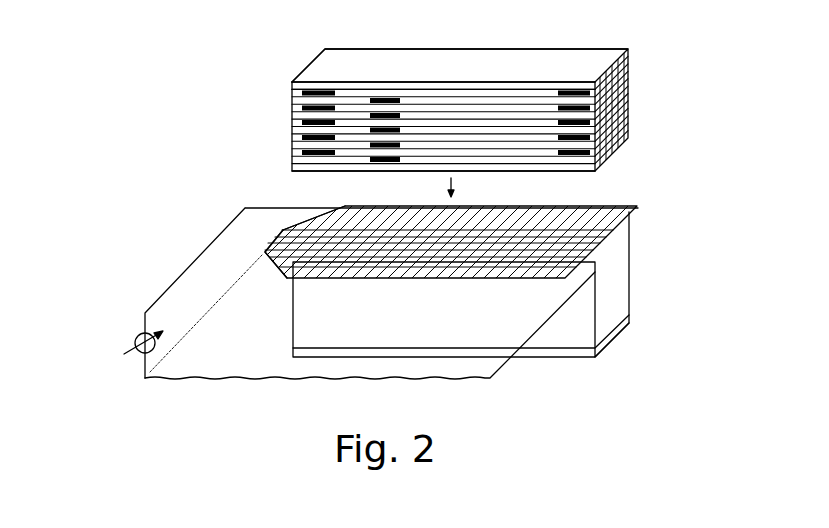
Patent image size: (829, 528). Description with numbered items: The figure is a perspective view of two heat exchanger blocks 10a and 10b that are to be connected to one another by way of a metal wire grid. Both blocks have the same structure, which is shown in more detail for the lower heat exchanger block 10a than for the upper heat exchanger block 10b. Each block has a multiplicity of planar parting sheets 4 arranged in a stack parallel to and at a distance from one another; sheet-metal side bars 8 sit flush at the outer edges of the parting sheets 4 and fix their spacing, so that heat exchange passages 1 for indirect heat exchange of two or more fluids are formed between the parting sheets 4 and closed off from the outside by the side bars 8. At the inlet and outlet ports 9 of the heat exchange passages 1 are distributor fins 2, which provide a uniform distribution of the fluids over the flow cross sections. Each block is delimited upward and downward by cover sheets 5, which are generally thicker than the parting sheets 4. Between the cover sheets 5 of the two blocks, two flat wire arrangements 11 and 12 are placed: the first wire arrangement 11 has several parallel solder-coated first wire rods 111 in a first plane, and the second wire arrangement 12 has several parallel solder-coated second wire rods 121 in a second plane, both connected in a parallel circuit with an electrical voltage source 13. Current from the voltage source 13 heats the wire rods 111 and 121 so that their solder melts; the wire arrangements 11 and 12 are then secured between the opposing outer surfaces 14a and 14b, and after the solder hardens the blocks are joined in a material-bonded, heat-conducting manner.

The heat exchange passage 1 is at (286, 106).
The distributor fin 2 is at (385, 97).
The parting sheet 4 is at (455, 90).
The cover sheet 5 is at (628, 50).
The side bar 8 is at (510, 87).
The inlet and outlet port 9 is at (312, 62).
The lower heat exchanger block 10a is at (625, 287).
The upper heat exchanger block 10b is at (628, 108).
The first wire arrangement 11 is at (248, 205).
The second wire arrangement 12 is at (260, 242).
The electrical voltage source 13 is at (133, 338).
The outer surface of lower heat exchanger block 14a is at (640, 208).
The outer surface of upper heat exchanger block 14b is at (550, 174).
The first wire rod 111 is at (343, 226).
The second wire rod 121 is at (300, 222).